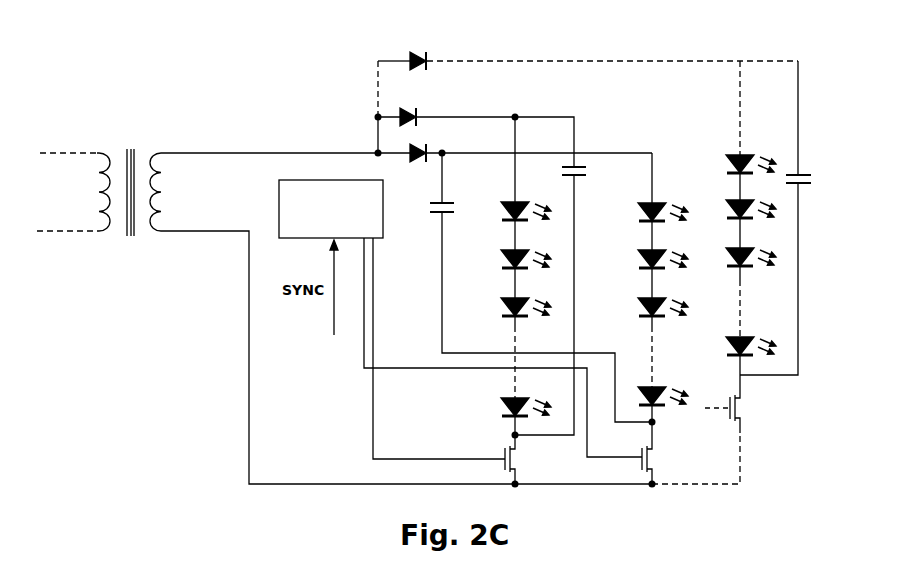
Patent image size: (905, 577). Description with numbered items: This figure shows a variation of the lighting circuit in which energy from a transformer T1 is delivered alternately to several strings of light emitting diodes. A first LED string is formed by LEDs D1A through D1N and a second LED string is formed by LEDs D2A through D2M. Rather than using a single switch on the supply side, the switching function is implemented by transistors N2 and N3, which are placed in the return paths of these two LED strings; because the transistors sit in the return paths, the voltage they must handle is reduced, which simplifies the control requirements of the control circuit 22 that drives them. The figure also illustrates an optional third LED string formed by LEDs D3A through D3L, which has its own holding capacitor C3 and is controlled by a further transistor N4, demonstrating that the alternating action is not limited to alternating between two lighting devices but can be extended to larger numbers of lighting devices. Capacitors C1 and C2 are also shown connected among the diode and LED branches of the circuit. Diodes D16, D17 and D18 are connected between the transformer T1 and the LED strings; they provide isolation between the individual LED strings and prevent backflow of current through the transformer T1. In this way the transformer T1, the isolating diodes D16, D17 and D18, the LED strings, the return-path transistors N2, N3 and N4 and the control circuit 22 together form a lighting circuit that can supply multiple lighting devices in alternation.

The transformer T1 is at (100, 180).
The diode D16 is at (401, 104).
The diode D17 is at (442, 145).
The diode D18 is at (434, 47).
The capacitor C1 is at (588, 170).
The capacitor C2 is at (428, 211).
The holding capacitor C3 is at (813, 183).
The control circuit 22 is at (331, 209).
The LED D1A is at (529, 200).
The LED D1N is at (528, 396).
The LED D2A is at (644, 209).
The LED D2M is at (649, 369).
The LED D3A is at (740, 151).
The LED D3L is at (755, 327).
The transistor N2 is at (661, 459).
The transistor N3 is at (526, 459).
The transistor N4 is at (741, 408).